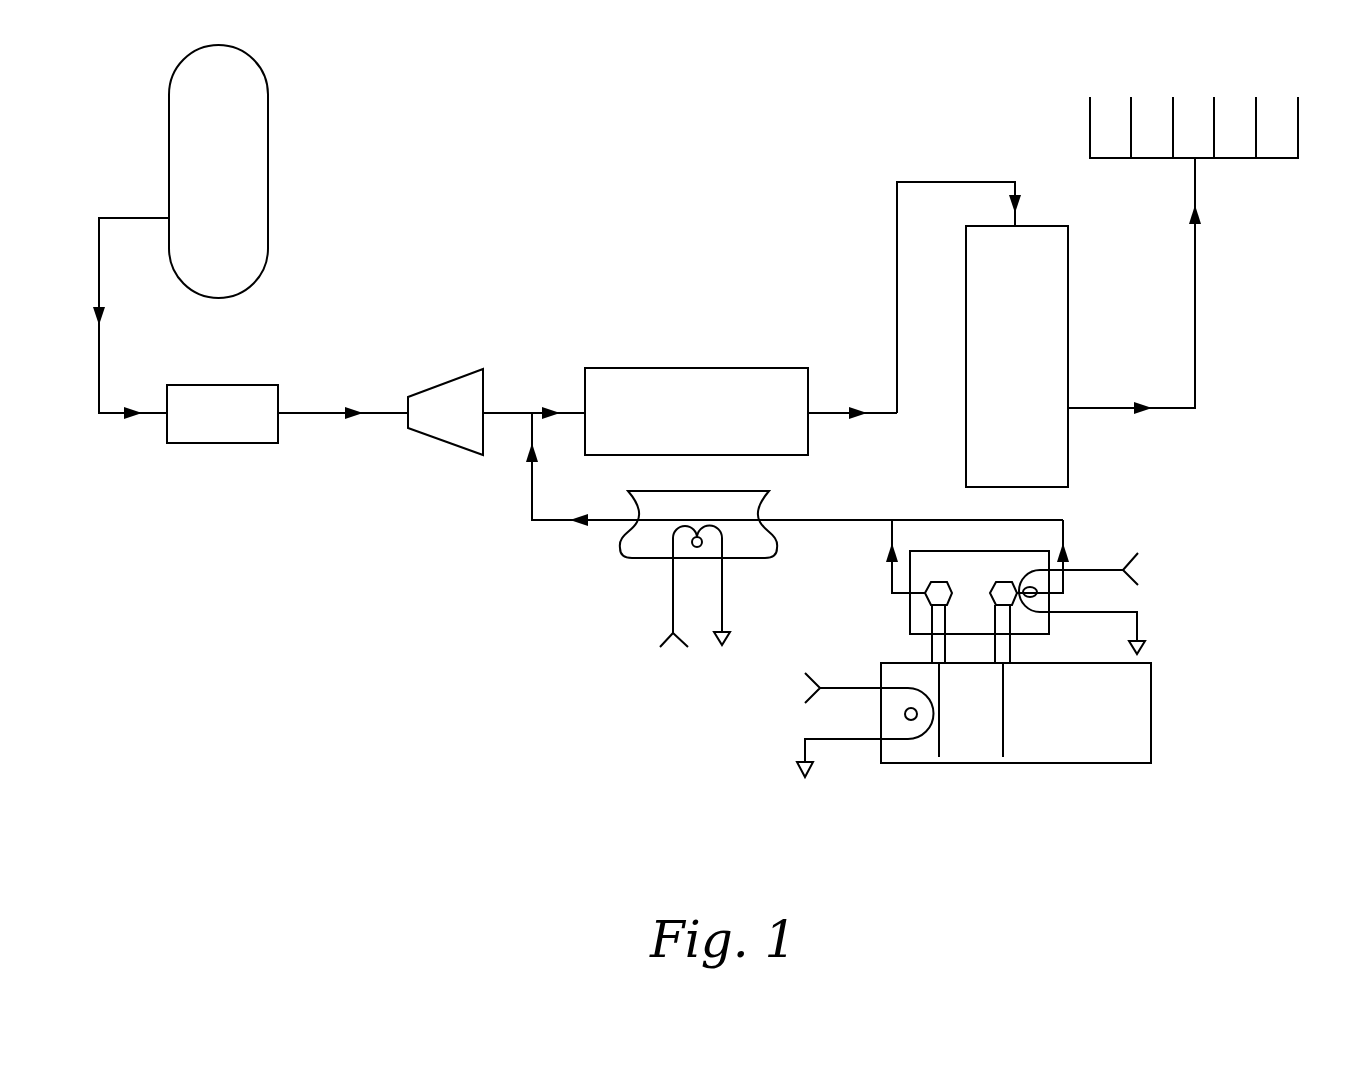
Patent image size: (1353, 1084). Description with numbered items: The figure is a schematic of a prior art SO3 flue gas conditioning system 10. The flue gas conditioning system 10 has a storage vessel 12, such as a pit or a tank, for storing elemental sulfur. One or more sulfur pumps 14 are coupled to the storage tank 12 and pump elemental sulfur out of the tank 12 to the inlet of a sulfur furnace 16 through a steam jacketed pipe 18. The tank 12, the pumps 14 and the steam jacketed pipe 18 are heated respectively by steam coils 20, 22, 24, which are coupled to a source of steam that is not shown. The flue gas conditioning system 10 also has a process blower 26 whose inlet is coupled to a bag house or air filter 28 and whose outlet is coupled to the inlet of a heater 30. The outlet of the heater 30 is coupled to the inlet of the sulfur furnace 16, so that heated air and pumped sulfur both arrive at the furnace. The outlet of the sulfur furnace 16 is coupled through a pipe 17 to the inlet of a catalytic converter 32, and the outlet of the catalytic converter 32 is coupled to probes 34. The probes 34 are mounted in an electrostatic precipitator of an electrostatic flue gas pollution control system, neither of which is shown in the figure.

The flue gas conditioning system 10 is at (305, 642).
The storage vessel 12 is at (1060, 723).
The sulfur pump 14 is at (1002, 570).
The sulfur furnace 16 is at (683, 422).
The pipe 17 is at (885, 291).
The steam jacketed pipe 18 is at (683, 513).
The steam coil 20 is at (890, 713).
The steam coil 22 is at (1050, 603).
The steam coil 24 is at (697, 562).
The process blower 26 is at (210, 424).
The bag house or air filter 28 is at (205, 181).
The heater 30 is at (433, 423).
The catalytic converter 32 is at (1001, 421).
The probes 34 is at (1240, 175).